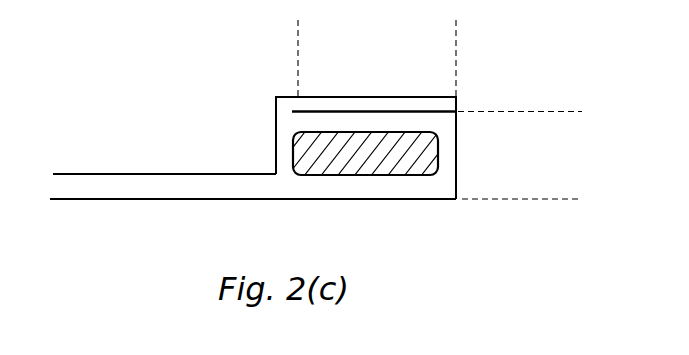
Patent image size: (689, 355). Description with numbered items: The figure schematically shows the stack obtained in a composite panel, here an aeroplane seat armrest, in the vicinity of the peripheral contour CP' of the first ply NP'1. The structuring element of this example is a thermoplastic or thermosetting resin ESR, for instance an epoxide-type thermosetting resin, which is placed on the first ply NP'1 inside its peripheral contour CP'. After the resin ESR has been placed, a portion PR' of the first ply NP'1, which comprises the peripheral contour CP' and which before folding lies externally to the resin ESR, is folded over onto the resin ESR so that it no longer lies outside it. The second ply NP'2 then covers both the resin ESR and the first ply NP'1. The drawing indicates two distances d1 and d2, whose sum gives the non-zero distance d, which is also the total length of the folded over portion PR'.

The first ply NP'1 is at (260, 218).
The second ply NP'2 is at (314, 126).
The peripheral contour CP' is at (317, 126).
The thermoplastic or thermosetting resin ESR is at (419, 162).
The folded over portion of the first ply PR' is at (495, 110).
The first distance d1 is at (456, 25).
The second distance d2 is at (574, 112).